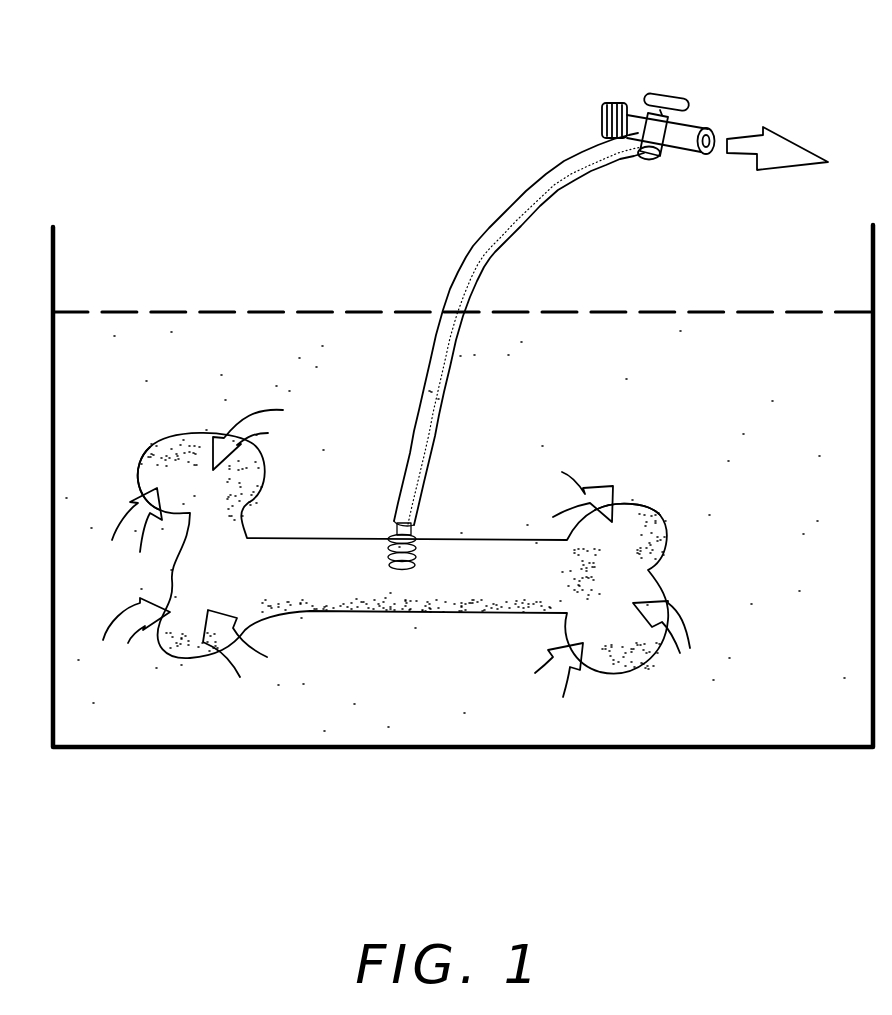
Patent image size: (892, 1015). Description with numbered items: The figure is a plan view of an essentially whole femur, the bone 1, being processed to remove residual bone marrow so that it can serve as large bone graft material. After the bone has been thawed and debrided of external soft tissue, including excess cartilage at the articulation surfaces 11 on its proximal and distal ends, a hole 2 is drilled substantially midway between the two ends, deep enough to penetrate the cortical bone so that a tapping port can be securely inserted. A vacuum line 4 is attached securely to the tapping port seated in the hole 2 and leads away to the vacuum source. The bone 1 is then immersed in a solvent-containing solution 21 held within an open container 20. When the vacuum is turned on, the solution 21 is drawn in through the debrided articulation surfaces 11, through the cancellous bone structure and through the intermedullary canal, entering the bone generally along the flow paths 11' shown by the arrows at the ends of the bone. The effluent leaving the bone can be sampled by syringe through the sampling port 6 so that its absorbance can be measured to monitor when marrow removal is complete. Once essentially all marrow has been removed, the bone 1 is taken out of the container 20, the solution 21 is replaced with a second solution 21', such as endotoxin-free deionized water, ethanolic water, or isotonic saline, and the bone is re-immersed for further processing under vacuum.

The bone 1 is at (460, 539).
The hole 2 is at (398, 569).
The vacuum line 4 is at (485, 230).
The sampling port 6 is at (630, 101).
The articulation surfaces 11 is at (412, 464).
The flow paths 11' is at (410, 563).
The open container 20 is at (282, 747).
The solution 21 is at (463, 576).
The second solution 21' is at (455, 531).